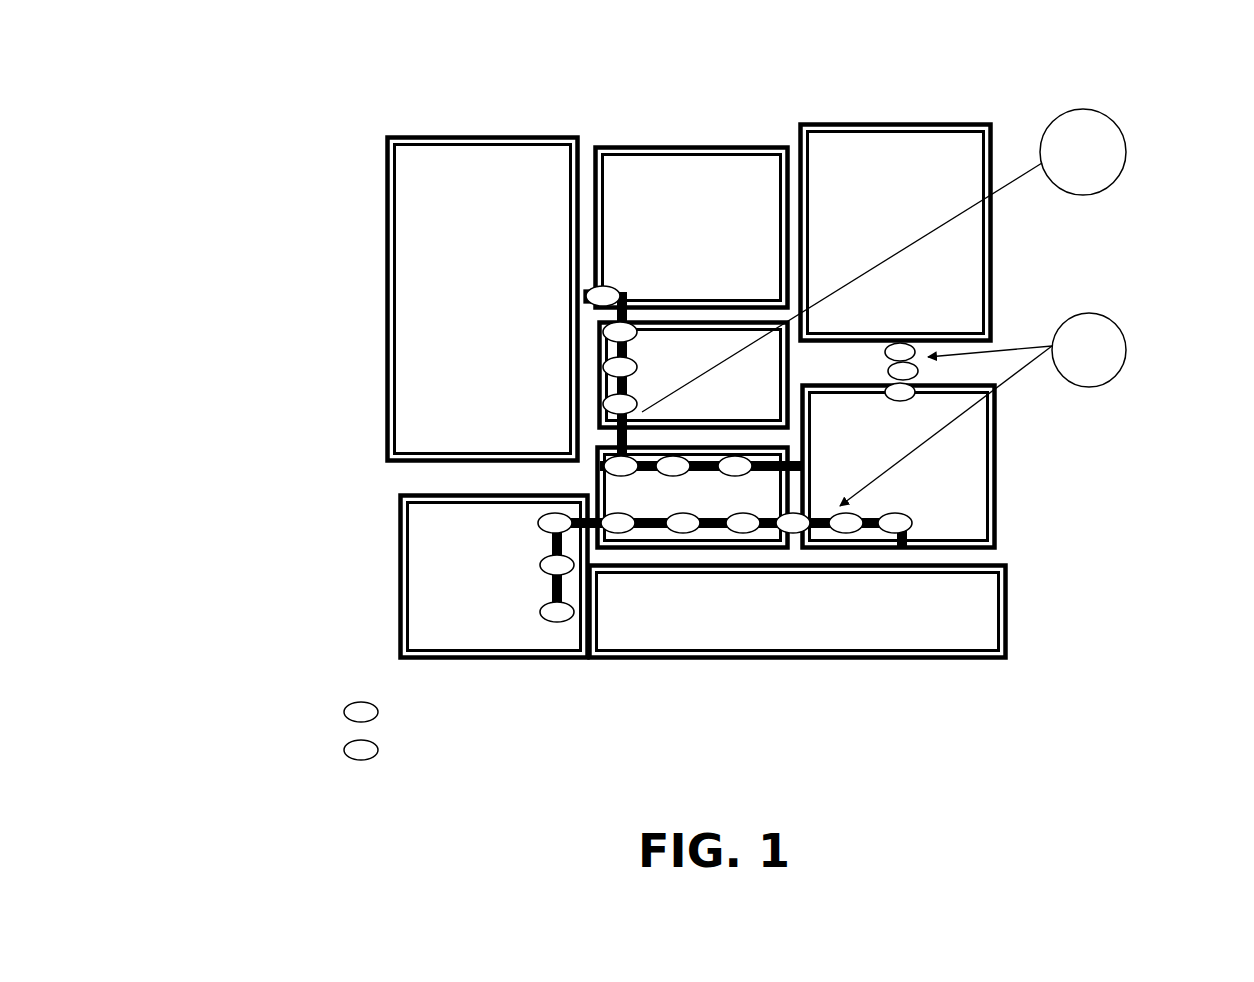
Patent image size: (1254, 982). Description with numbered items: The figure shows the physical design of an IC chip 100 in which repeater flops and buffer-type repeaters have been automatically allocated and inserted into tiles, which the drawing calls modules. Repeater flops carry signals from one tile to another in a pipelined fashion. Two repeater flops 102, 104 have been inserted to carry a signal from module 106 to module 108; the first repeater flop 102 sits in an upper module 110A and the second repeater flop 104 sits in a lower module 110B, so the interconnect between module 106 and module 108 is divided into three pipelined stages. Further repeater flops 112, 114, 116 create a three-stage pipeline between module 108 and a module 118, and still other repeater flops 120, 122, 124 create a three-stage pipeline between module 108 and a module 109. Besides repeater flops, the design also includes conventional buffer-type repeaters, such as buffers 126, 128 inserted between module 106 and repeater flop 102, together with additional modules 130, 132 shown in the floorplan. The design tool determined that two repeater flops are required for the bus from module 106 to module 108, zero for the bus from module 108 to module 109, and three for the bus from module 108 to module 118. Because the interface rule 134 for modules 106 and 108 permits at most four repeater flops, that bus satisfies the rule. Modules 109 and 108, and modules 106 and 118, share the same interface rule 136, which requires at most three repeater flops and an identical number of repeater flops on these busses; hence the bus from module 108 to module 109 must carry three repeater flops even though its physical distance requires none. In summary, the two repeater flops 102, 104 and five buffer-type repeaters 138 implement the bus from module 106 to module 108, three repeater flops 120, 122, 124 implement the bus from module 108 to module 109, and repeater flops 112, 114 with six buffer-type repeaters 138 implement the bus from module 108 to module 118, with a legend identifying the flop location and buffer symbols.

The IC chip 100 is at (228, 100).
The first repeater flop 102 is at (604, 370).
The second repeater flop 104 is at (598, 471).
The module 106 is at (483, 299).
The module 108 is at (899, 467).
The module 109 is at (896, 233).
The upper module 110A is at (694, 375).
The lower module 110B is at (692, 498).
The repeater flop 112 is at (540, 524).
The repeater flop 114 is at (738, 534).
The repeater flop 116 is at (915, 525).
The module 118 is at (494, 577).
The repeater flop 120 is at (920, 347).
The repeater flop 122 is at (886, 372).
The repeater flop 124 is at (884, 398).
The buffer 126 is at (608, 286).
The buffer 128 is at (642, 324).
The module 130 is at (692, 228).
The module 132 is at (798, 612).
The interface rule 134 is at (1125, 138).
The interface rule 136 is at (1127, 348).
The buffer-type repeater 138 is at (332, 749).